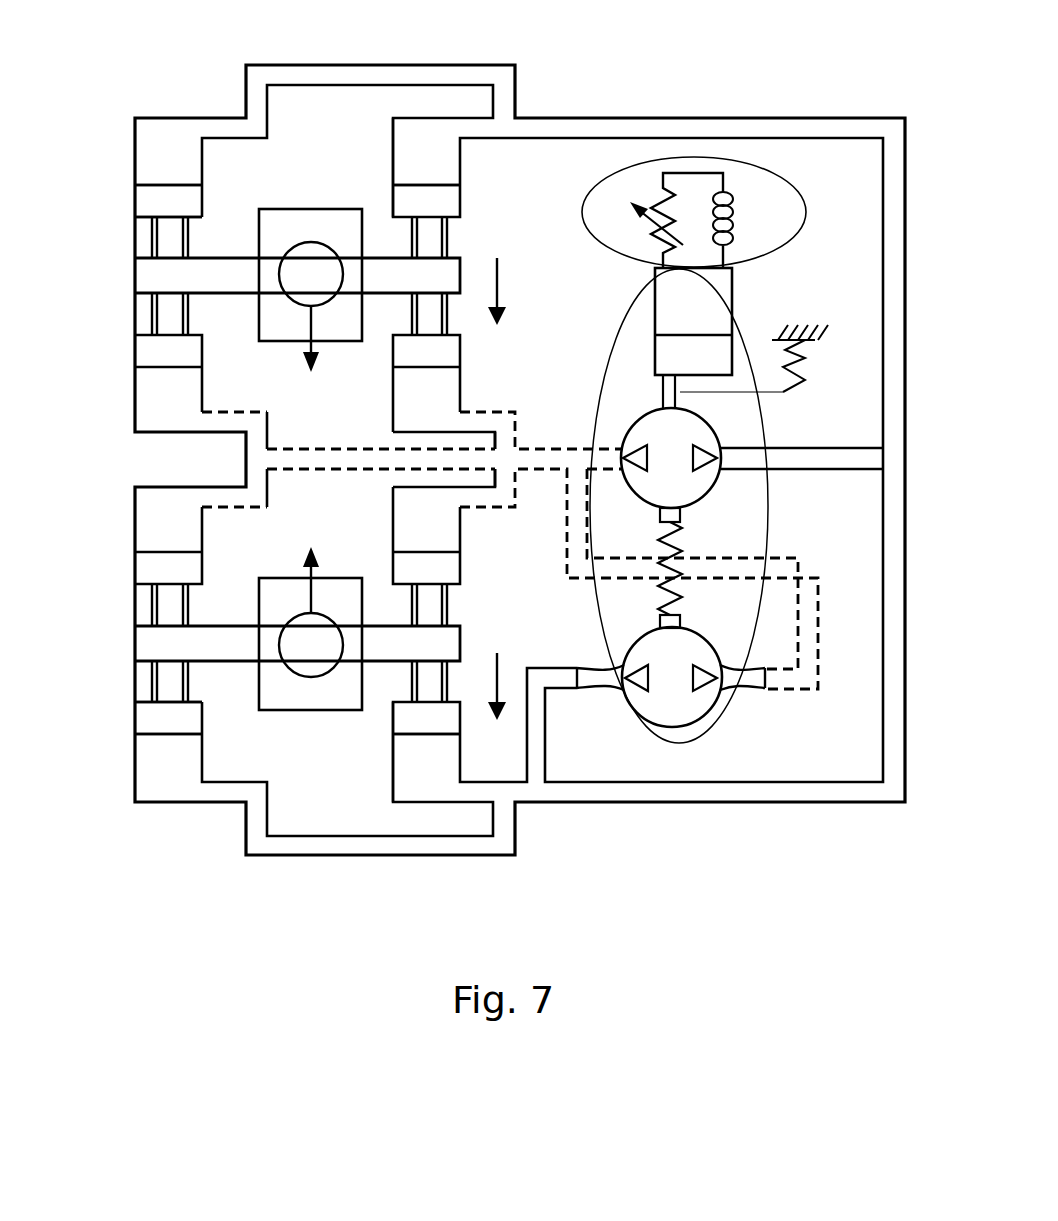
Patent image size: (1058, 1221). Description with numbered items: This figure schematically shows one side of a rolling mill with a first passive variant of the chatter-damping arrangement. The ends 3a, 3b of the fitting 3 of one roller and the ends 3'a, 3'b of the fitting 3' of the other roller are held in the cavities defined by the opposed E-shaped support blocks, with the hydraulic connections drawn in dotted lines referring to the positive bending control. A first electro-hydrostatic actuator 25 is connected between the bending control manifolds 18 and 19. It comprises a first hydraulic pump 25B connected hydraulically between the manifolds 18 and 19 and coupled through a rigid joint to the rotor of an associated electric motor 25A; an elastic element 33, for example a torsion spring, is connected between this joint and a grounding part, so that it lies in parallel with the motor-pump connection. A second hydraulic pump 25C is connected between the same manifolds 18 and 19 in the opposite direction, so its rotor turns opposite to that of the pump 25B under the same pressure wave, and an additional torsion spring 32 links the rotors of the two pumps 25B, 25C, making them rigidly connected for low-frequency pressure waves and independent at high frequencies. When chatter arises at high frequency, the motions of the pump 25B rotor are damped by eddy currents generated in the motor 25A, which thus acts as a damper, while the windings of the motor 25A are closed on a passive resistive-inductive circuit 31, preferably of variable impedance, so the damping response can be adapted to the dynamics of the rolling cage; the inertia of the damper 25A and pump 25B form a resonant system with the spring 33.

The fitting 3 is at (291, 306).
The end of fitting 3a is at (403, 268).
The end of fitting 3b is at (167, 278).
The fitting 3' is at (310, 677).
The end of fitting 3'a is at (372, 647).
The end of fitting 3'b is at (112, 622).
The manifold 18 is at (507, 460).
The manifold 19 is at (886, 455).
The electro-hydrostatic actuator 25 is at (707, 728).
The electric motor 25A is at (693, 338).
The first hydraulic pump 25B is at (687, 488).
The second hydraulic pump 25C is at (668, 698).
The resistive-inductive circuit 31 is at (591, 213).
The torsion spring 32 is at (677, 556).
The elastic element 33 is at (805, 360).